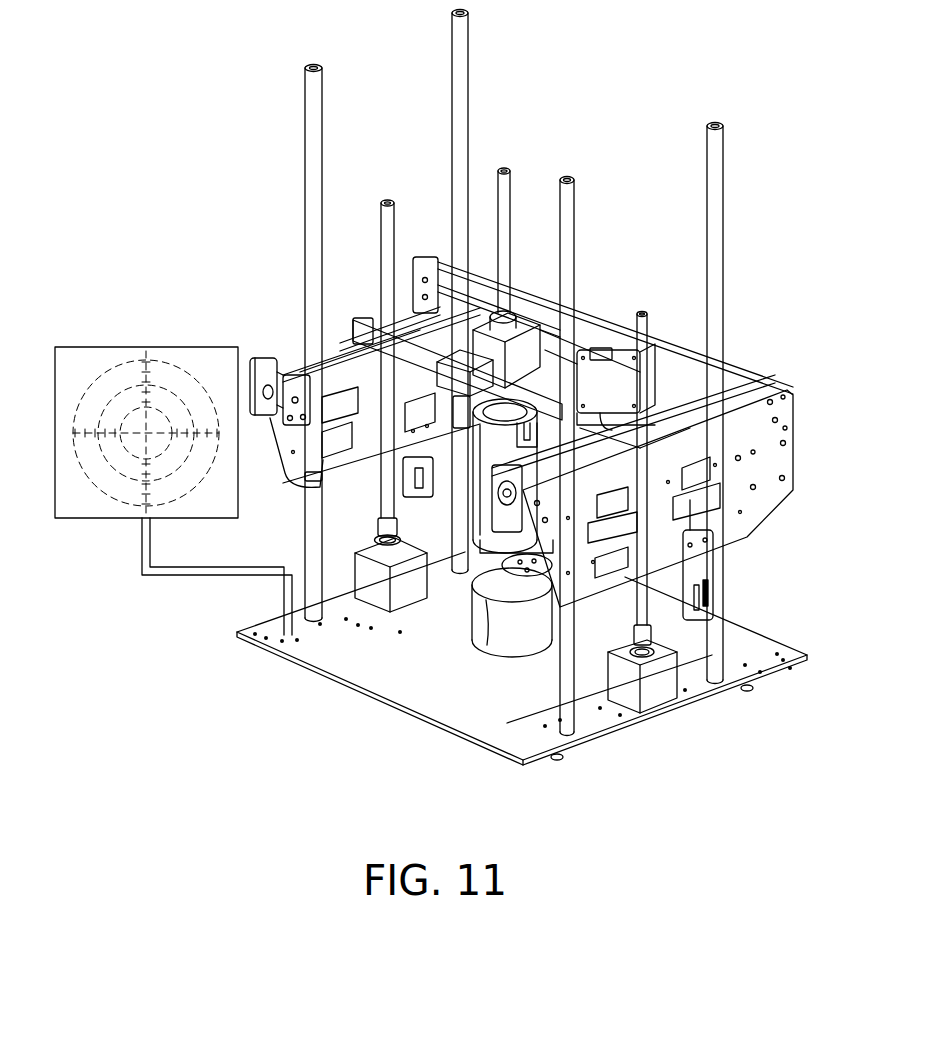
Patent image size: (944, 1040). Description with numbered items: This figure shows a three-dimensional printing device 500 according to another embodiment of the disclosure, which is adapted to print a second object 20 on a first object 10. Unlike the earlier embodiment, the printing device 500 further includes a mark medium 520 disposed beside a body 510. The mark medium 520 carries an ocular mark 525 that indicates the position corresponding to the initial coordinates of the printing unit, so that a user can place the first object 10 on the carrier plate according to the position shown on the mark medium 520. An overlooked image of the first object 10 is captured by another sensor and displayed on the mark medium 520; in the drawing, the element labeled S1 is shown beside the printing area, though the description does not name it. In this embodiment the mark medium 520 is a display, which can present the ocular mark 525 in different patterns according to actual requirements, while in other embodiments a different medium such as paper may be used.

The 3D printing device 500 is at (762, 826).
The body 510 is at (782, 525).
The mark medium 520 is at (102, 520).
The ocular mark 525 is at (187, 375).
The first sensing unit S1 is at (470, 547).
The second object 20 is at (490, 580).
The first object 10 is at (515, 628).